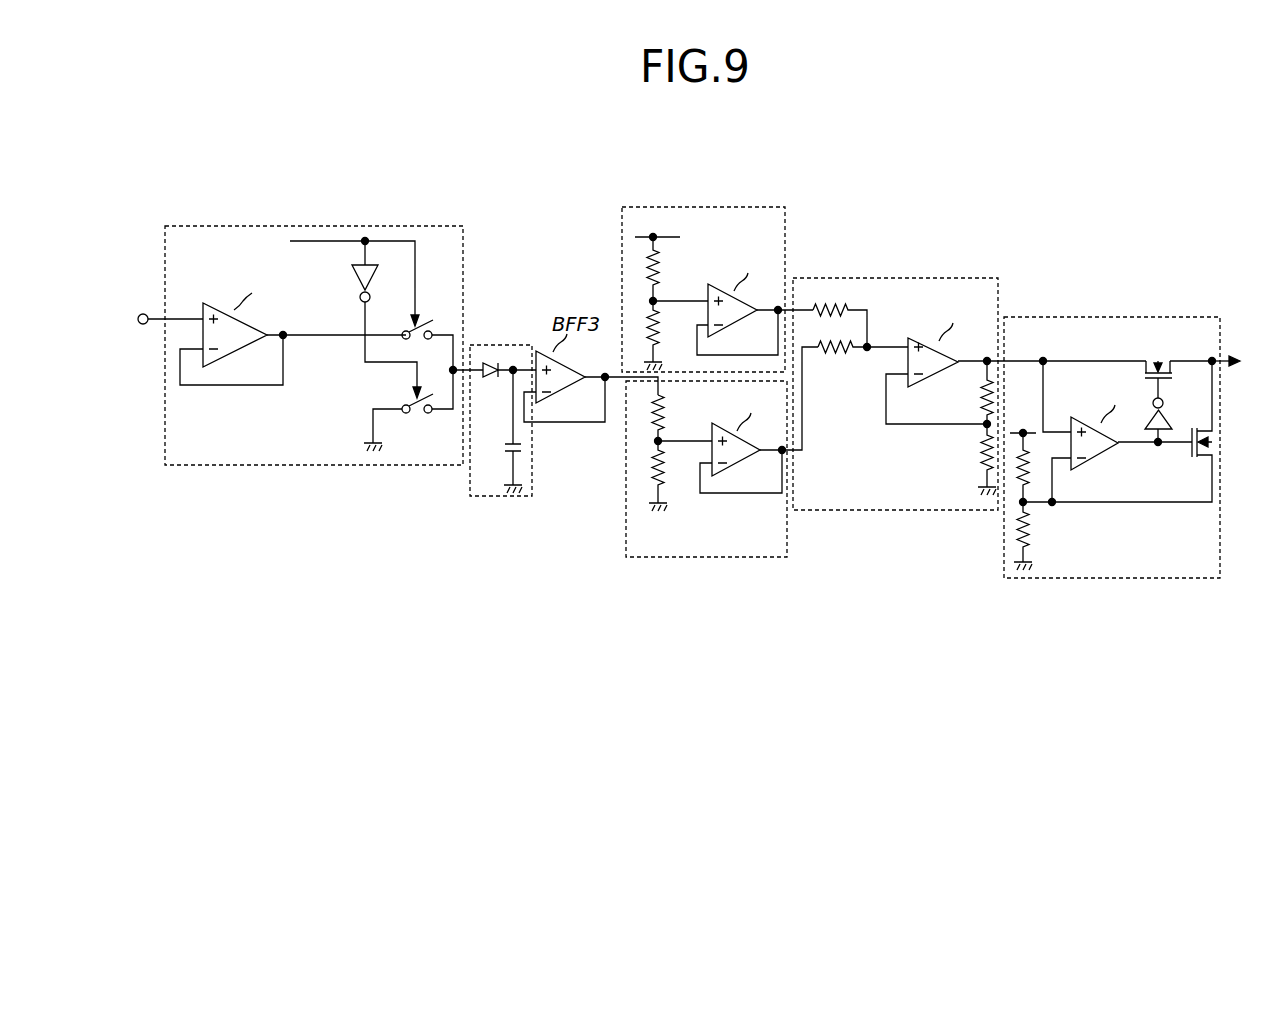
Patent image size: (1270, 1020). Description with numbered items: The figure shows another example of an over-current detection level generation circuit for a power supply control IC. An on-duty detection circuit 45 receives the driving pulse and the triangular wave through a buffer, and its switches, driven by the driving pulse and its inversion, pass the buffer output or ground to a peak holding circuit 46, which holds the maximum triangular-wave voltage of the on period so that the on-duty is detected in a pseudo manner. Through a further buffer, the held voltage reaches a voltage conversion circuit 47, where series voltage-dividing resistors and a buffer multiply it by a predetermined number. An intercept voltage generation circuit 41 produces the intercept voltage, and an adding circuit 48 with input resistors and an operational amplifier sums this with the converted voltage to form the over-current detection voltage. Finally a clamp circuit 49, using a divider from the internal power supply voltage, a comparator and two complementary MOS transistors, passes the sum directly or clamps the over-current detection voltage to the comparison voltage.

The intercept voltage generation circuit 41 is at (784, 245).
The on-duty detection circuit 45 is at (305, 466).
The peak holding circuit 46 is at (498, 497).
The voltage conversion circuit 47 is at (676, 557).
The adding circuit 48 is at (895, 278).
The clamp circuit 49 is at (1097, 317).